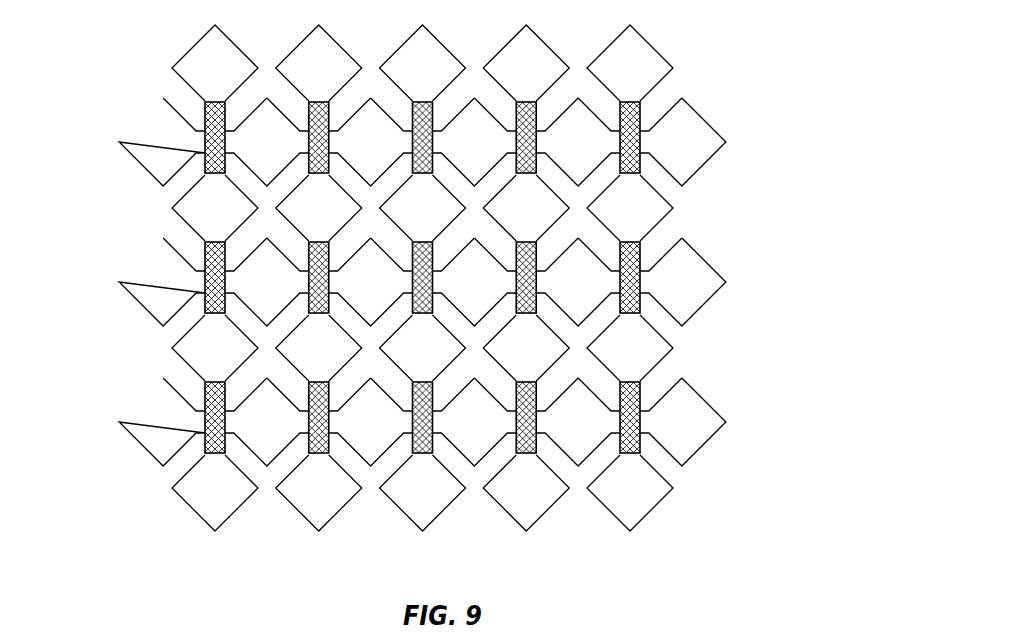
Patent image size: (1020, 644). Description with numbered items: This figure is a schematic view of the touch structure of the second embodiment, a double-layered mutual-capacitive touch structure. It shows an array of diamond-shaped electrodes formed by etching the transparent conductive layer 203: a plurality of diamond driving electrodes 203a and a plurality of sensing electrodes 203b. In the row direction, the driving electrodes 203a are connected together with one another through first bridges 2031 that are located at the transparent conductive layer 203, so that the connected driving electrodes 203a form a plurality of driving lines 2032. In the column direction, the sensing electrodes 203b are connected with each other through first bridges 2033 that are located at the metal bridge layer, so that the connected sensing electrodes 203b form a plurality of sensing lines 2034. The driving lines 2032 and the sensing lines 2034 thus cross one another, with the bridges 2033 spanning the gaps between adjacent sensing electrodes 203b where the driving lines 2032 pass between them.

The transparent conductive layer 203 is at (431, 281).
The driving electrodes 203a is at (143, 145).
The sensing electrodes 203b is at (212, 73).
The first bridges 2031 is at (199, 278).
The driving lines 2032 is at (725, 143).
The first bridges 2033 is at (640, 446).
The sensing lines 2034 is at (625, 535).